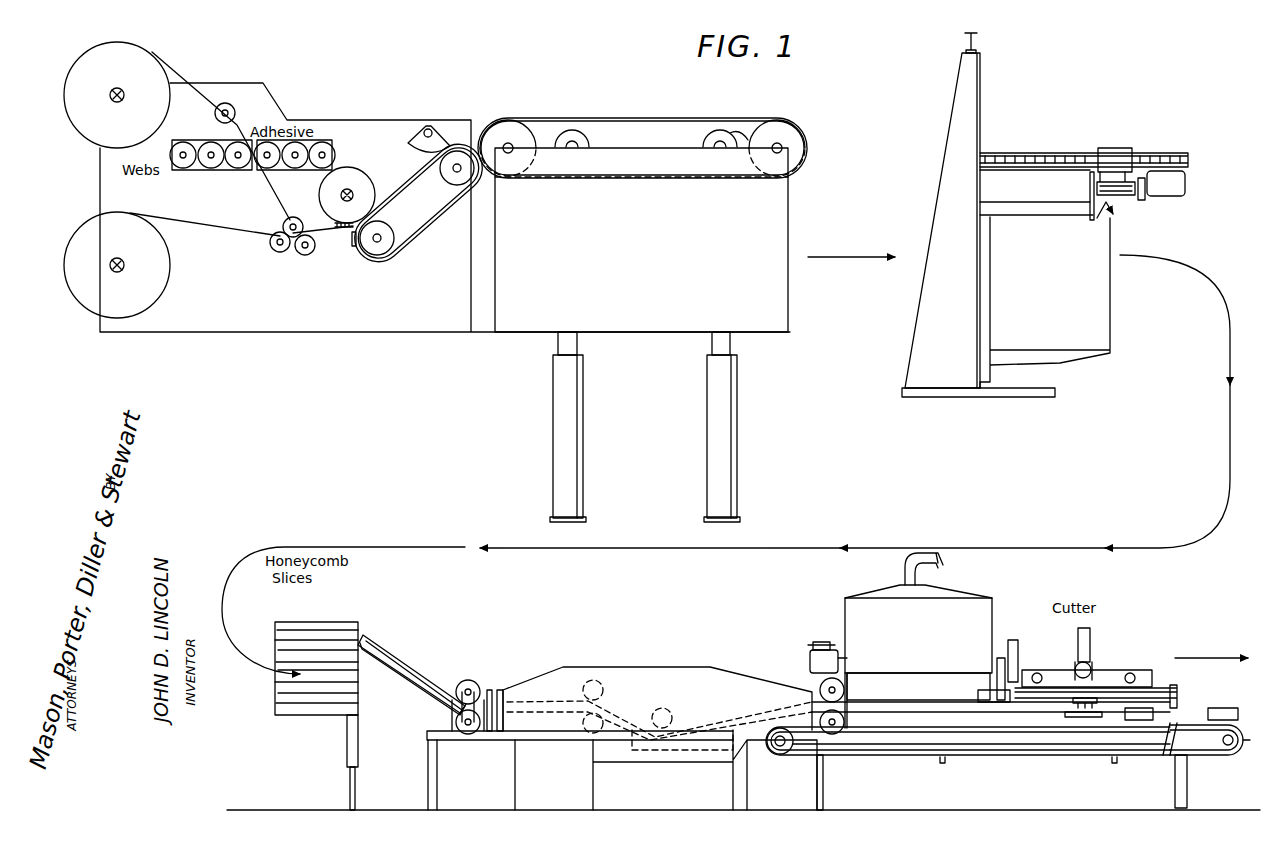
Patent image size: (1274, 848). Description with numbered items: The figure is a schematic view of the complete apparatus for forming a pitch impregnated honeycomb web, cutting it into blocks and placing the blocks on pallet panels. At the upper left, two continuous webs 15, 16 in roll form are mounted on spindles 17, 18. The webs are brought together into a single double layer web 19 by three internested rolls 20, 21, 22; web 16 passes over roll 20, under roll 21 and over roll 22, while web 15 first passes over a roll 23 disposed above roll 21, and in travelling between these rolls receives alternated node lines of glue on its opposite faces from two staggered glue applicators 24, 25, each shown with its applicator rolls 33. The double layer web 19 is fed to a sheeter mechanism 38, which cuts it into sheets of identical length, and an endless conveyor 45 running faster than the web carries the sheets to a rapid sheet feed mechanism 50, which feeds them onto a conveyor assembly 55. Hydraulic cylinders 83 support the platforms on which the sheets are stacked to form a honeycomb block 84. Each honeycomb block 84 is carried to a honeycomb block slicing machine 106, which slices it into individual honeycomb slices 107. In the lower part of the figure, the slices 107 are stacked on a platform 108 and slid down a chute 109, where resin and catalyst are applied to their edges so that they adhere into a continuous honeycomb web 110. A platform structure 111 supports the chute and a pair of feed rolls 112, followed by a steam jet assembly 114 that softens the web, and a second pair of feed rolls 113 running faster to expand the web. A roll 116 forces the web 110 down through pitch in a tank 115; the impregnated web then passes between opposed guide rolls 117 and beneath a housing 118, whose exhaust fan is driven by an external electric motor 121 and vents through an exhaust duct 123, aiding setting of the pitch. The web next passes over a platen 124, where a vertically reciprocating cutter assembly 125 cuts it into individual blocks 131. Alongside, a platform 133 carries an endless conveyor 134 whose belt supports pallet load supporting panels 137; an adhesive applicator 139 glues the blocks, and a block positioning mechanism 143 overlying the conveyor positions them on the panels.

The continuous web 15 is at (197, 80).
The continuous web 16 is at (250, 233).
The spindle 17 is at (123, 97).
The spindle 18 is at (123, 268).
The double layer web 19 is at (327, 233).
The roll 20 is at (278, 252).
The roll 21 is at (283, 223).
The roll 22 is at (307, 258).
The roll 23 is at (227, 105).
The glue applicator 24 is at (207, 173).
The glue applicator 25 is at (297, 173).
The adhesive applicator rollers 33 is at (198, 145).
The sheeter mechanism 38 is at (378, 195).
The endless conveyor 45 is at (420, 234).
The sheet feed mechanism 50 is at (446, 129).
The conveyor assembly 55 is at (668, 116).
The hydraulic cylinder 83 is at (577, 433).
The honeycomb block 84 is at (1097, 300).
The honeycomb block slicing machine 106 is at (1004, 141).
The honeycomb slice 107 is at (1107, 215).
The platform 108 is at (318, 720).
The chute 109 is at (413, 683).
The continuous honeycomb web 110 is at (498, 689).
The platform structure 111 is at (428, 760).
The feed rolls 112 is at (467, 686).
The feed rolls 113 is at (590, 682).
The steam jet assembly 114 is at (488, 688).
The tank 115 is at (670, 752).
The roll 116 is at (668, 709).
The guide rolls 117 is at (807, 683).
The housing 118 is at (983, 630).
The electric motor 121 is at (812, 655).
The exhaust duct 123 is at (930, 575).
The platen 124 is at (1010, 737).
The cutter assembly 125 is at (1026, 668).
The block 131 is at (1138, 708).
The platform 133 is at (1187, 778).
The endless conveyor 134 is at (1095, 760).
The load supporting panel 137 is at (962, 725).
The adhesive applicator 139 is at (1077, 719).
The block positioning mechanism 143 is at (1098, 660).